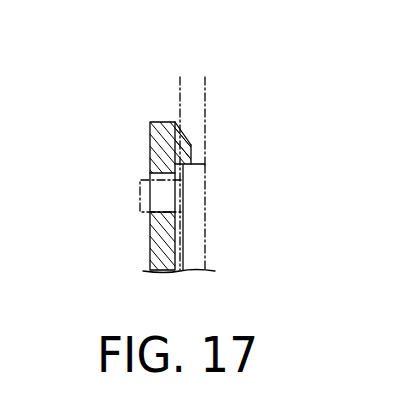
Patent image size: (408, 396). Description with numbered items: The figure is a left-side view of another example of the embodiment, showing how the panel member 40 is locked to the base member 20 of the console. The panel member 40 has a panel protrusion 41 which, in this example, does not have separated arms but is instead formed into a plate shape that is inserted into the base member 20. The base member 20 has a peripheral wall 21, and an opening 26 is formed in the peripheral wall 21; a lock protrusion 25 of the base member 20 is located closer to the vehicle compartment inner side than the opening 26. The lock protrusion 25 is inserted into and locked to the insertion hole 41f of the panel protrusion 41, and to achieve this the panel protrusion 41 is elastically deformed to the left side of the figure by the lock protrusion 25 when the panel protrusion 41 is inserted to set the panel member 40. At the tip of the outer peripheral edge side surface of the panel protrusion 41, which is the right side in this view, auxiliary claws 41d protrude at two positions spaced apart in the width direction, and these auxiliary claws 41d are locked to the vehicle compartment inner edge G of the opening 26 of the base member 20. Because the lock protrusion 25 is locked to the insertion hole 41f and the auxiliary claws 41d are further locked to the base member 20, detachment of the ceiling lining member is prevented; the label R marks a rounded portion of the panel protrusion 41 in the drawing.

The base member 20 is at (205, 90).
The peripheral wall 21 is at (205, 203).
The lock protrusion 25 is at (140, 197).
The opening 26 is at (193, 142).
The panel member 40 is at (148, 249).
The panel protrusion 41 is at (150, 232).
The auxiliary claw 41d is at (180, 152).
The insertion hole 41f is at (160, 178).
The rounded corner R is at (184, 136).
The vehicle compartment inner edge G is at (193, 157).